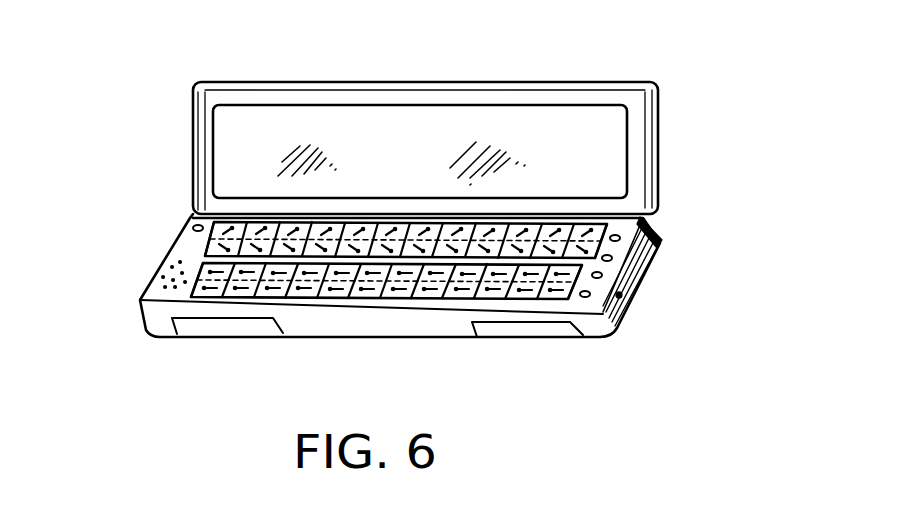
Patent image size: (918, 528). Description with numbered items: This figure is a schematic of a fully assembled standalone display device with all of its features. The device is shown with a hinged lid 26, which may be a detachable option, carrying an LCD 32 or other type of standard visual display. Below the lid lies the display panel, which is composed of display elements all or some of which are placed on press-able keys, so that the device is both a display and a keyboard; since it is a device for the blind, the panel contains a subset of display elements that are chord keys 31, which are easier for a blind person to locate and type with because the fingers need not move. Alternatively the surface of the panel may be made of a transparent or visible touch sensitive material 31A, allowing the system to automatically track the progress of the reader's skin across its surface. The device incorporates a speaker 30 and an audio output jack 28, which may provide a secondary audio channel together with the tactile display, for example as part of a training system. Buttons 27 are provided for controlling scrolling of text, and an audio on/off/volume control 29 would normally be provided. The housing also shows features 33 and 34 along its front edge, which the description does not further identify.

The hinged lid 26 is at (660, 143).
The buttons 27 is at (612, 256).
The audio output jack 28 is at (622, 295).
The audio on/off/volume control 29 is at (195, 226).
The speaker 30 is at (165, 272).
The chord keys 31 is at (330, 300).
The touch sensitive surface 31A is at (386, 281).
The LCD 32 is at (590, 128).
The right slot 33 is at (503, 333).
The left slot 34 is at (208, 334).